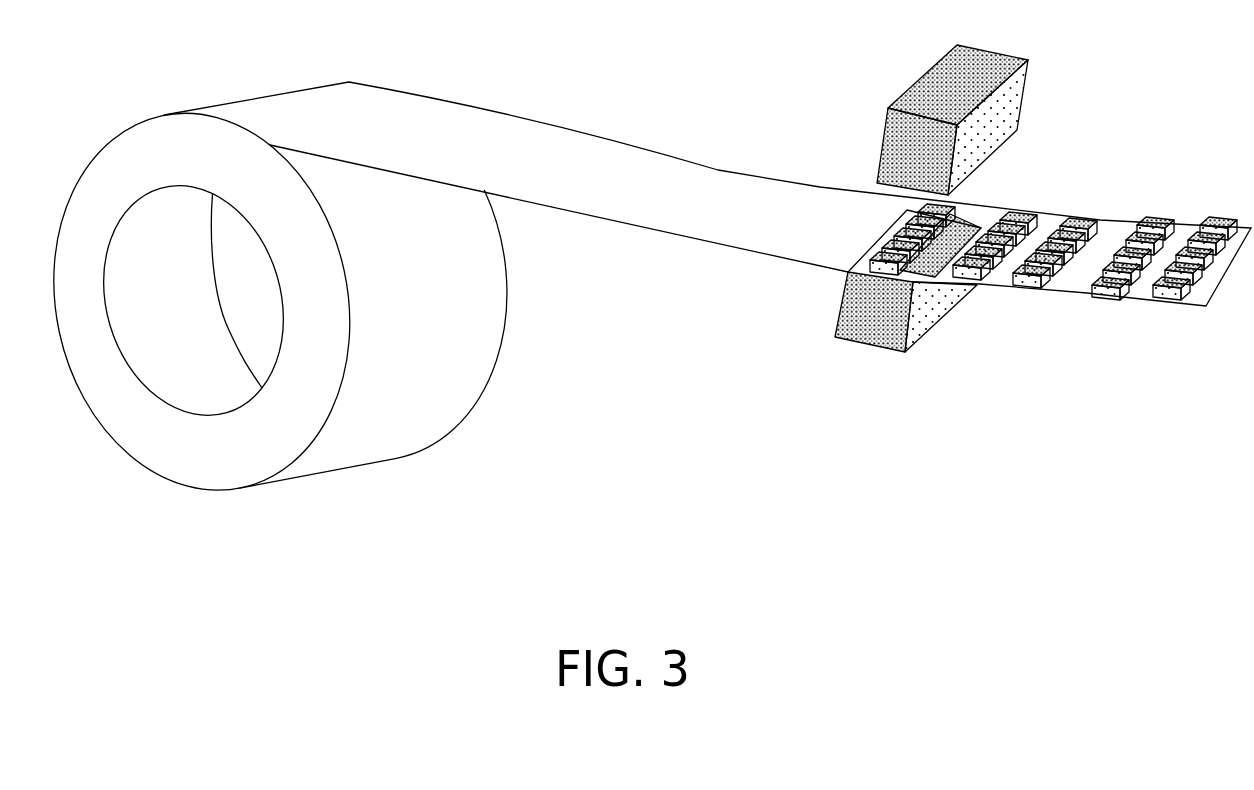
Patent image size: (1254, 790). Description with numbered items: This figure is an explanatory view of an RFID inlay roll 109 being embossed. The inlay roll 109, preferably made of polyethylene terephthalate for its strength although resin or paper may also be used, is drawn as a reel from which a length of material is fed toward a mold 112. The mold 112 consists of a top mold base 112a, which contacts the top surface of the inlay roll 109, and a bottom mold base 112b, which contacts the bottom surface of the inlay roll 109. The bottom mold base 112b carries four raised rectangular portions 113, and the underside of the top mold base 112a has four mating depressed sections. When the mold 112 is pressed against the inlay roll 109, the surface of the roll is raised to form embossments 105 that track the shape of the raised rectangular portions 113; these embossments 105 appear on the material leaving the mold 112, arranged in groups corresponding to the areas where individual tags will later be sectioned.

The embossments 105 is at (1150, 222).
The inlay roll 109 is at (186, 472).
The mold 112 is at (974, 263).
The top mold base 112a is at (1023, 85).
The bottom mold base 112b is at (930, 312).
The raised rectangular portions 113 is at (848, 274).